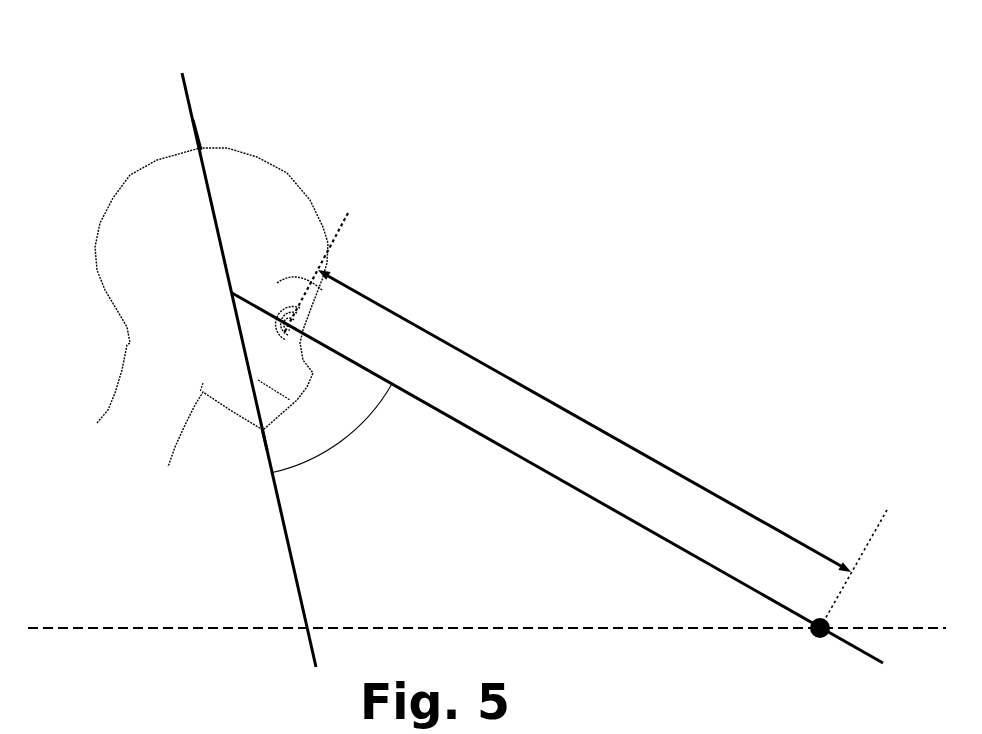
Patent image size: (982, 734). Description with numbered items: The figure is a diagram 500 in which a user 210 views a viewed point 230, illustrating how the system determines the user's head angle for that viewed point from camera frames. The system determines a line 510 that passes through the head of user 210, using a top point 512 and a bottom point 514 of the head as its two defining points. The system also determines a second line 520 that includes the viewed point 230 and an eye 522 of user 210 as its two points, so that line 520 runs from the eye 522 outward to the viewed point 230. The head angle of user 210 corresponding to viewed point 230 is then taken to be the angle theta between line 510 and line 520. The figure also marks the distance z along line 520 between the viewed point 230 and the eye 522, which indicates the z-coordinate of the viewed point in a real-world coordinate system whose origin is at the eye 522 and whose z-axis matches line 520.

The diagram 500 is at (102, 72).
The user 210 is at (127, 412).
The line 510 is at (188, 100).
The top point 512 is at (199, 133).
The bottom point 514 is at (265, 438).
The line 520 is at (563, 483).
The eye 522 is at (282, 337).
The viewed point 230 is at (794, 692).